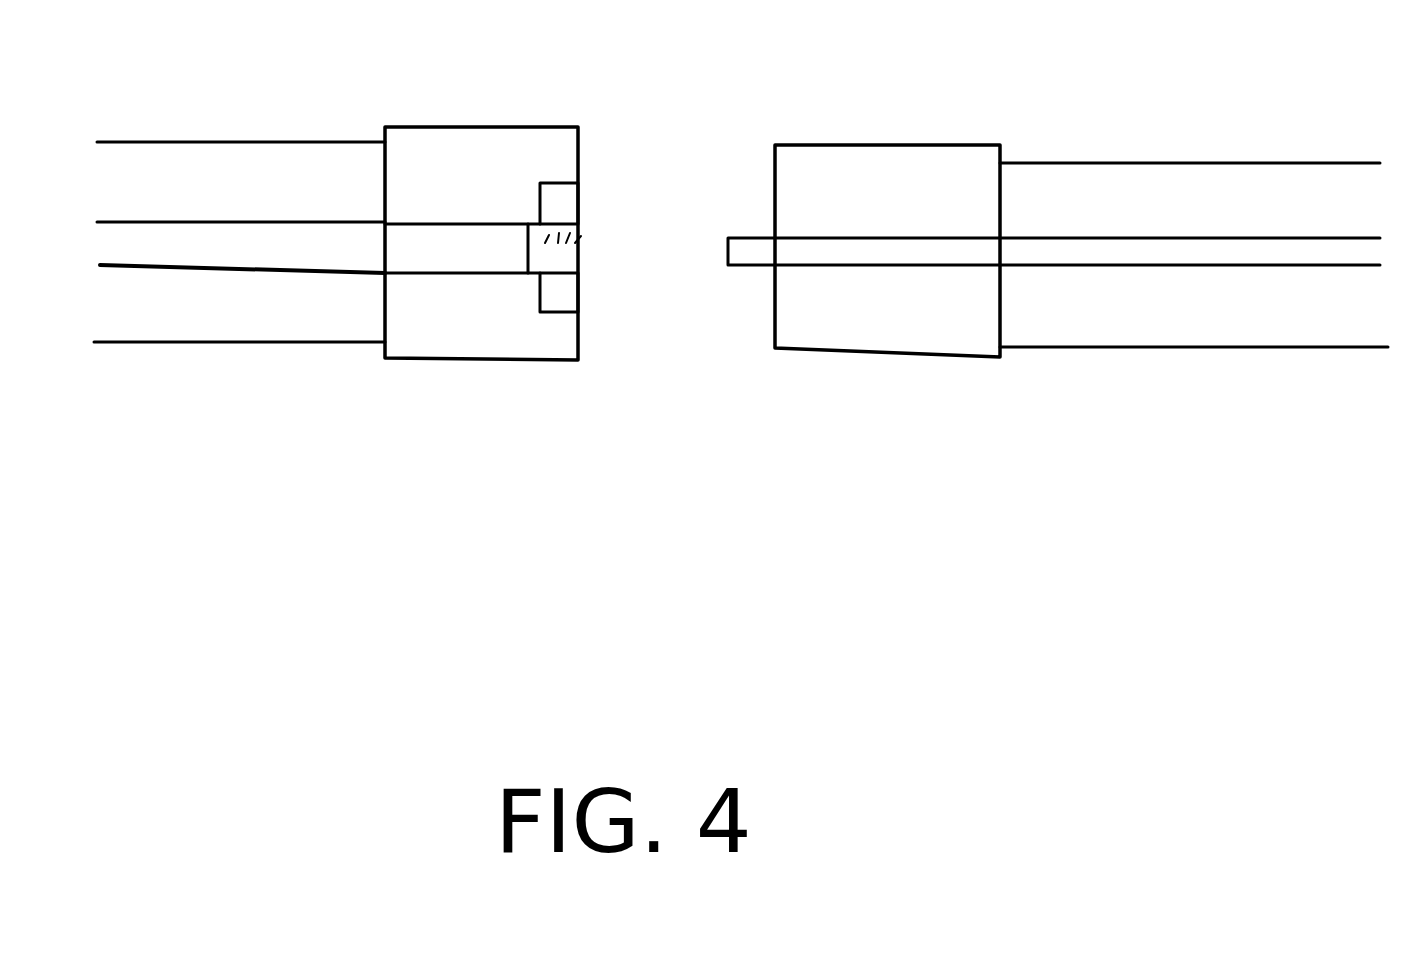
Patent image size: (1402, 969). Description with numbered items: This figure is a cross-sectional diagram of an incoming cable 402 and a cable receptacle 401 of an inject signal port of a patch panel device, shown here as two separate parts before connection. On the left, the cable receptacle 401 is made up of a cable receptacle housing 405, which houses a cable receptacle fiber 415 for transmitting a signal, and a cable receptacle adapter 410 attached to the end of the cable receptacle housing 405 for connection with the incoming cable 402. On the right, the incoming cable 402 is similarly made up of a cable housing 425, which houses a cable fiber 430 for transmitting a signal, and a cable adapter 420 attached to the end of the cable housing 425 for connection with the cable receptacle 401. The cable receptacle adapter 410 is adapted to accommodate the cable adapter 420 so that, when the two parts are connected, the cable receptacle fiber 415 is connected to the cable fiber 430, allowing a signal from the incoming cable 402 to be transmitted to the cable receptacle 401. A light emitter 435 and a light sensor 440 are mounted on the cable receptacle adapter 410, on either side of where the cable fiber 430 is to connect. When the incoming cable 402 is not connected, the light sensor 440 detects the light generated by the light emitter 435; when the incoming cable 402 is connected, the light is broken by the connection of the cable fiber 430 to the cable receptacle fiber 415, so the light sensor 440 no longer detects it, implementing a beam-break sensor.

The cable receptacle 401 is at (243, 405).
The incoming cable 402 is at (1021, 398).
The cable receptacle housing 405 is at (220, 157).
The cable receptacle adapter 410 is at (472, 138).
The cable receptacle fiber 415 is at (157, 237).
The cable adapter 420 is at (885, 157).
The cable housing 425 is at (1102, 175).
The cable fiber 430 is at (758, 243).
The light emitter 435 is at (567, 202).
The light sensor 440 is at (570, 298).